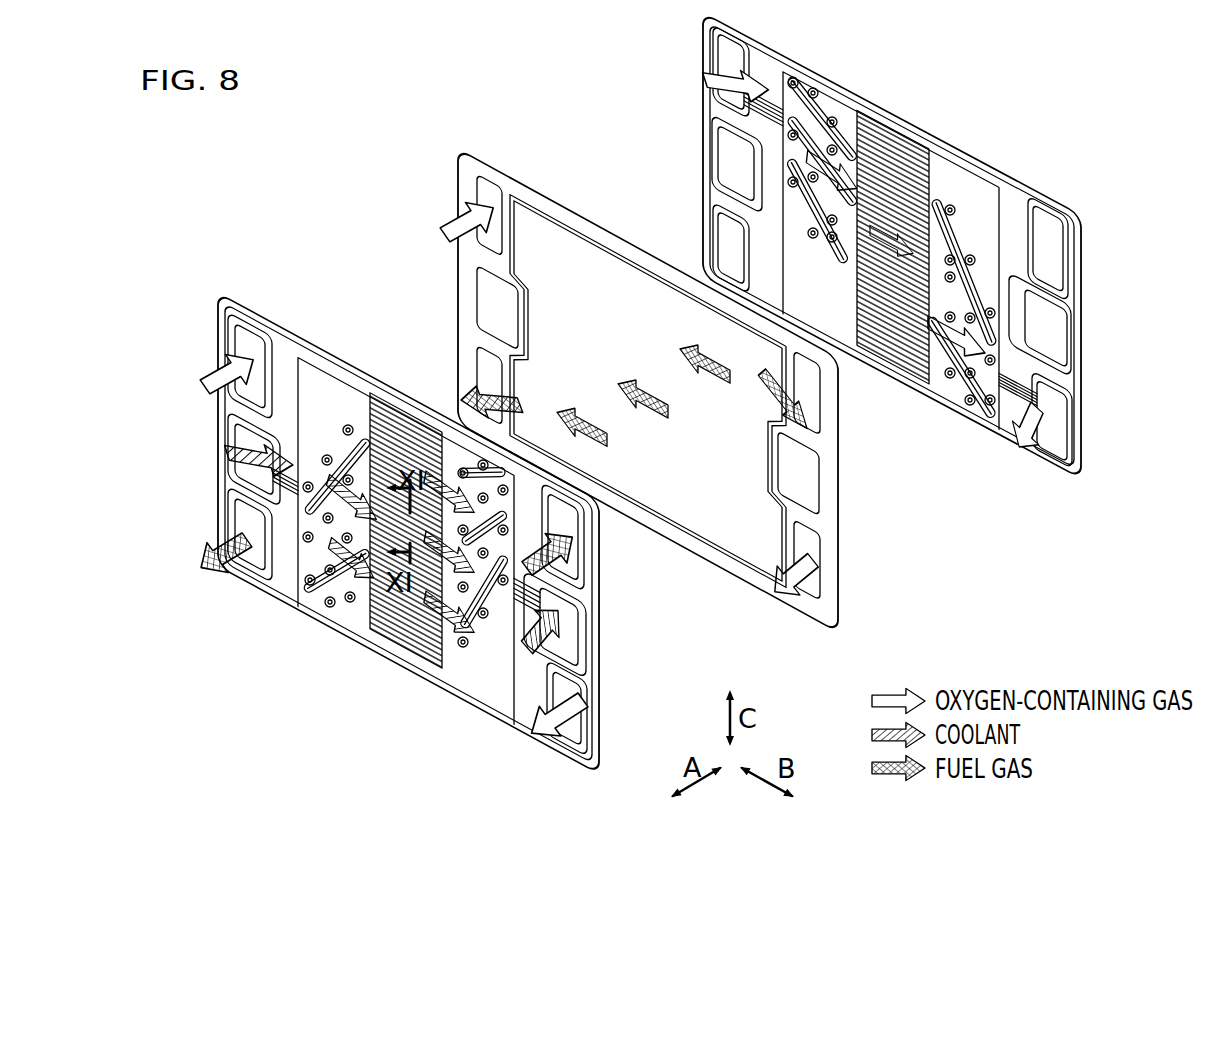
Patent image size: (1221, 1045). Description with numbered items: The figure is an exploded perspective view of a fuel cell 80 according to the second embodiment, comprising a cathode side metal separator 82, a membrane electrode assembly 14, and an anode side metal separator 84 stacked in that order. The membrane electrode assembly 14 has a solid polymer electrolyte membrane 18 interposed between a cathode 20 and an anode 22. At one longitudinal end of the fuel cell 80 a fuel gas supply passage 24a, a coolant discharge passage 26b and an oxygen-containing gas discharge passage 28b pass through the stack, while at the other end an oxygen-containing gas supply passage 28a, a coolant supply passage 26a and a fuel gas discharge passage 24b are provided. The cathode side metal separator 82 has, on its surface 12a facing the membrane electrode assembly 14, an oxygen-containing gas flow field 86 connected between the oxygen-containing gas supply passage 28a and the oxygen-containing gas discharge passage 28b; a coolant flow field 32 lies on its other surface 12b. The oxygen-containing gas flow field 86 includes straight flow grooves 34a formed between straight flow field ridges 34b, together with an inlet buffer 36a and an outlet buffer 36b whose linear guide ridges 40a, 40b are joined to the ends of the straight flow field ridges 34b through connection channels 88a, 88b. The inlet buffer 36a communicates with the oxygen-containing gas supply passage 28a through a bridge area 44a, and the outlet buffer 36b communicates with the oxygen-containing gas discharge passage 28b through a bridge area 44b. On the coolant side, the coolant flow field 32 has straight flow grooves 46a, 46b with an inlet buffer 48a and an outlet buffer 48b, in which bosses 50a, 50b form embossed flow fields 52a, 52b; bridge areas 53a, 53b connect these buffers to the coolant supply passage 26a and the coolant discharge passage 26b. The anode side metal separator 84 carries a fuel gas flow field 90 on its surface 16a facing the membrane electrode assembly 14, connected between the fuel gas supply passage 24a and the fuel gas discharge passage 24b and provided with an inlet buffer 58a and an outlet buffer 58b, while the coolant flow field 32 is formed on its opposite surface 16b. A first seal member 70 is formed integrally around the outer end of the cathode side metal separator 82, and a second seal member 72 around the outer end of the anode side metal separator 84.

The fuel cell 80 is at (300, 151).
The membrane electrode assembly 14 is at (460, 150).
The solid polymer electrolyte membrane 18 is at (805, 610).
The cathode 20 is at (728, 553).
The anode 22 is at (701, 535).
The anode side metal separator 84 is at (220, 296).
The cathode side metal separator 82 is at (1078, 212).
The surface 16a is at (484, 698).
The surface 16b is at (506, 720).
The surface 12a is at (992, 433).
The other surface 12b is at (967, 410).
The fuel gas supply passage 24a is at (567, 568).
The fuel gas discharge passage 24b is at (250, 515).
The coolant supply passage 26a is at (250, 430).
The coolant discharge passage 26b is at (568, 622).
The oxygen-containing gas supply passage 28a is at (247, 350).
The oxygen-containing gas discharge passage 28b is at (570, 688).
The coolant flow field 32 is at (343, 388).
The straight flow grooves 34a is at (863, 345).
The straight flow field ridges 34b is at (913, 373).
The inlet buffer 36a is at (829, 87).
The outlet buffer 36b is at (977, 187).
The linear guide ridges 40a is at (808, 78).
The linear guide ridges 40b is at (960, 237).
The bridge area 44a is at (760, 118).
The bridge area 44b is at (1025, 385).
The straight flow grooves 46a is at (400, 610).
The outlet buffer 46b is at (363, 613).
The inlet buffer 48a is at (296, 553).
The outlet buffer 48b is at (428, 602).
The bosses 50a is at (812, 240).
The bosses 50b is at (486, 613).
The embossed flow field 52a is at (323, 527).
The embossed flow field 52b is at (977, 257).
The bridge area 53a is at (280, 495).
The bridge area 53b is at (542, 670).
The inlet buffer 58a is at (451, 680).
The outlet buffer 58b is at (324, 613).
The first seal member 70 is at (1077, 452).
The second seal member 72 is at (588, 742).
The oxygen-containing gas flow field 86 is at (912, 154).
The connection channels 88a is at (850, 140).
The connection channels 88b is at (932, 195).
The fuel gas flow field 90 is at (388, 430).